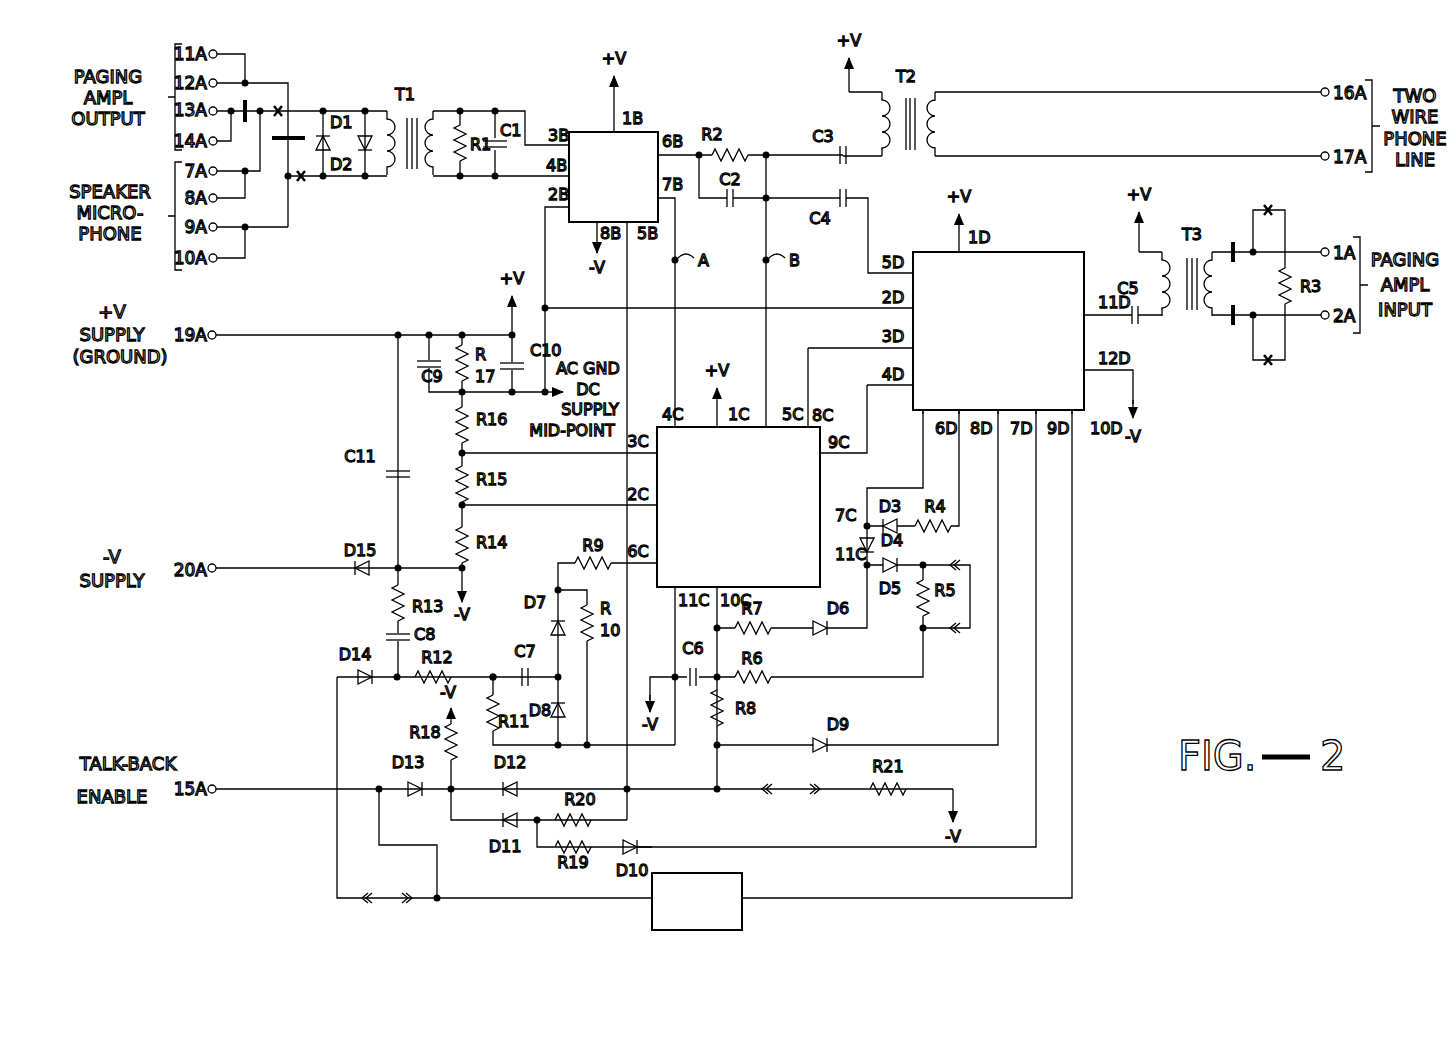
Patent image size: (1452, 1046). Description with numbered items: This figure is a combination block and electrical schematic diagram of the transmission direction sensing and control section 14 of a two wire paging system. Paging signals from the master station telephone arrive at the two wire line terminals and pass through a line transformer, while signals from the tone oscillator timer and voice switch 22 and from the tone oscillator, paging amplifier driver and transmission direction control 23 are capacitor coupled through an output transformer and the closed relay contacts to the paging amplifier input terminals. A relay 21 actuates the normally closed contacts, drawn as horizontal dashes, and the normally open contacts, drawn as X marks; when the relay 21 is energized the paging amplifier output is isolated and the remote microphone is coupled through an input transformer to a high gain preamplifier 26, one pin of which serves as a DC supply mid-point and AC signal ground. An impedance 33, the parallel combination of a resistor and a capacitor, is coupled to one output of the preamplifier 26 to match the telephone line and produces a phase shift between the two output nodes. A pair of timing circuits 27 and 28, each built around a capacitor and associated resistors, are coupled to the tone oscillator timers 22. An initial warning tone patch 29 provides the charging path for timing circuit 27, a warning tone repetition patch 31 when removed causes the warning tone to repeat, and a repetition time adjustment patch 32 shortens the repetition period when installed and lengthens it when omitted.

The transmission direction sensing and control section 14 is at (1120, 530).
The relay 21 is at (745, 920).
The tone oscillator timer and voice switch 22 is at (812, 492).
The tone oscillator, paging amplifier driver and transmission direction control 23 is at (1046, 252).
The high gain preamplifier 26 is at (640, 140).
The timing circuit 27 is at (503, 666).
The timing circuit 28 is at (700, 708).
The initial warning tone patch 29 is at (393, 901).
The warning tone repetition patch 31 is at (780, 792).
The repetition time adjustment patch 32 is at (972, 636).
The impedance 33 is at (762, 145).